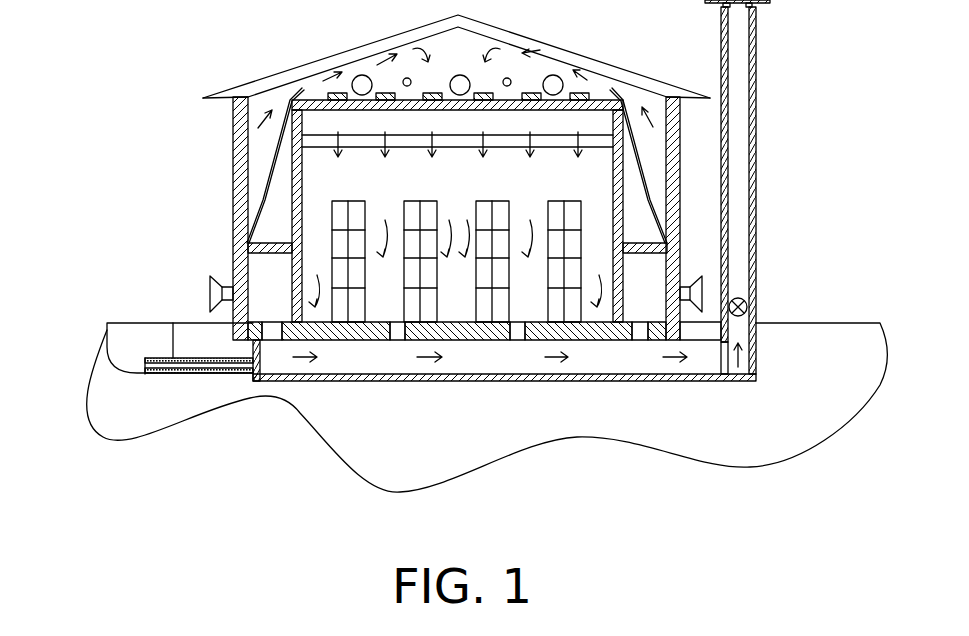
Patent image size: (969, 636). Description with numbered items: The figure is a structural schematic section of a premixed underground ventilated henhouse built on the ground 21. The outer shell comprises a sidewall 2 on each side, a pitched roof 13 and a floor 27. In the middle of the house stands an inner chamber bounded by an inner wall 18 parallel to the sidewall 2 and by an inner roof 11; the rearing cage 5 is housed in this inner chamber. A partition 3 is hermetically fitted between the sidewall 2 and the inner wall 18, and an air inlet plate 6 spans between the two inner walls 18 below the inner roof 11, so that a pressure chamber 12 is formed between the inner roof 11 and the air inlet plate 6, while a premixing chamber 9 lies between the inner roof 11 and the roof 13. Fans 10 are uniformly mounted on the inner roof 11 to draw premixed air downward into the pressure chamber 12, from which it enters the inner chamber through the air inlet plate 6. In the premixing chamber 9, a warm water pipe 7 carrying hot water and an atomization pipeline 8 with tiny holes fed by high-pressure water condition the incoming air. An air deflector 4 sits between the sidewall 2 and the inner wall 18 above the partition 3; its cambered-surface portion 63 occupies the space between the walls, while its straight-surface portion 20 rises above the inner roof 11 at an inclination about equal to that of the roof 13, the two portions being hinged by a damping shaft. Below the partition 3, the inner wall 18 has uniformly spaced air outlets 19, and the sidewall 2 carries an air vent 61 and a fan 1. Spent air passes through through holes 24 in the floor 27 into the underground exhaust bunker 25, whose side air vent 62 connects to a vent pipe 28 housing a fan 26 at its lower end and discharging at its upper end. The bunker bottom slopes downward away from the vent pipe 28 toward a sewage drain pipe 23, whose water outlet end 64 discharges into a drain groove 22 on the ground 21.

The fan 1 is at (267, 332).
The sidewall 2 is at (233, 242).
The partition 3 is at (233, 197).
The air deflector 4 is at (265, 243).
The rearing cage 5 is at (332, 201).
The air inlet plate 6 is at (380, 135).
The warm water pipe 7 is at (356, 78).
The atomization pipeline 8 is at (405, 79).
The premixing chamber 9 is at (472, 48).
The fan 10 is at (482, 97).
The inner roof 11 is at (553, 123).
The pressure chamber 12 is at (583, 98).
The roof 13 is at (673, 98).
The inner wall 18 is at (680, 197).
The air outlet 19 is at (620, 313).
The straight-surface portion 20 is at (612, 88).
The ground 21 is at (100, 400).
The drain groove 22 is at (123, 362).
The sewage drain pipe 23 is at (168, 360).
The through hole 24 is at (270, 332).
The underground exhaust bunker 25 is at (727, 355).
The fan 26 is at (645, 363).
The floor 27 is at (670, 318).
The vent pipe 28 is at (755, 110).
The air vent 61 is at (233, 292).
The air vent 62 is at (753, 324).
The cambered-surface portion 63 is at (268, 188).
The water outlet end 64 is at (145, 362).